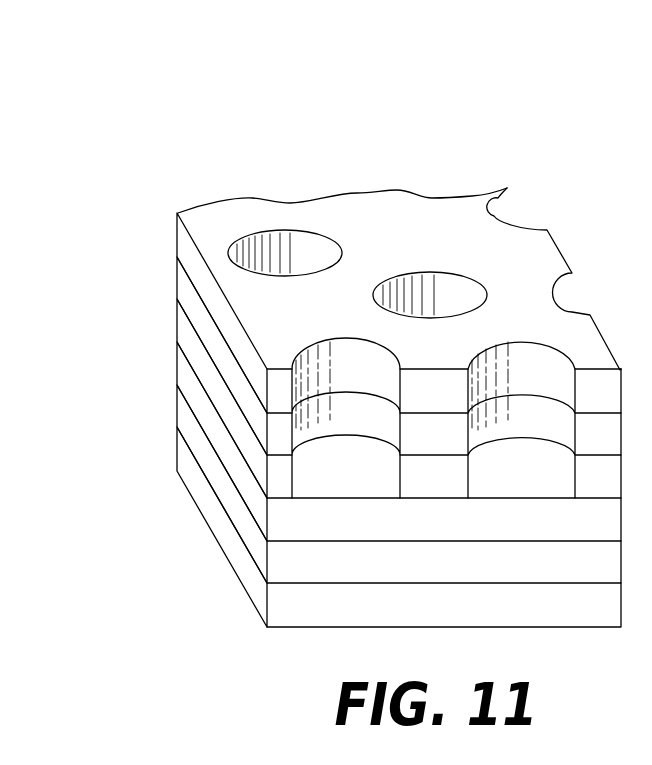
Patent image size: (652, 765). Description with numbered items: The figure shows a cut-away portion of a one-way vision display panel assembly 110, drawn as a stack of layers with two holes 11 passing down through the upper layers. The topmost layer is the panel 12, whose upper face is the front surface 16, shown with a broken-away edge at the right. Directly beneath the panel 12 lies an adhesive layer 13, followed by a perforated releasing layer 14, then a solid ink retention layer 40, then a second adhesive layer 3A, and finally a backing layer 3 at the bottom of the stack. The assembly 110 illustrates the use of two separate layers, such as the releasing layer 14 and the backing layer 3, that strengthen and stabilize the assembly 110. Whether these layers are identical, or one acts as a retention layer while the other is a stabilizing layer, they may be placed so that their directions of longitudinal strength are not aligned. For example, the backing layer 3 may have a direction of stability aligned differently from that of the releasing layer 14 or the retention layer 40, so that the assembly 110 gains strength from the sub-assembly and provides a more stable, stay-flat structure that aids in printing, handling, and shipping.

The one-way vision display panel assembly 110 is at (530, 110).
The nozzle openings 11 is at (313, 230).
The panel 12 is at (184, 238).
The adhesive layer 13 is at (185, 282).
The perforated releasing layer 14 is at (188, 326).
The solid ink retention layer 40 is at (184, 367).
The second adhesive layer 3A is at (186, 407).
The backing layer 3 is at (188, 457).
The front surface 16 is at (543, 253).